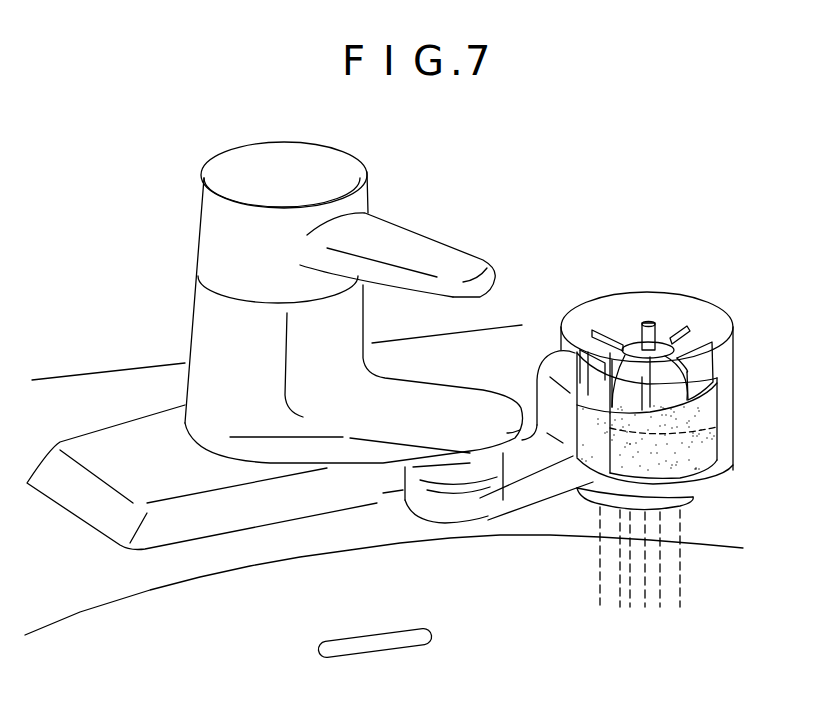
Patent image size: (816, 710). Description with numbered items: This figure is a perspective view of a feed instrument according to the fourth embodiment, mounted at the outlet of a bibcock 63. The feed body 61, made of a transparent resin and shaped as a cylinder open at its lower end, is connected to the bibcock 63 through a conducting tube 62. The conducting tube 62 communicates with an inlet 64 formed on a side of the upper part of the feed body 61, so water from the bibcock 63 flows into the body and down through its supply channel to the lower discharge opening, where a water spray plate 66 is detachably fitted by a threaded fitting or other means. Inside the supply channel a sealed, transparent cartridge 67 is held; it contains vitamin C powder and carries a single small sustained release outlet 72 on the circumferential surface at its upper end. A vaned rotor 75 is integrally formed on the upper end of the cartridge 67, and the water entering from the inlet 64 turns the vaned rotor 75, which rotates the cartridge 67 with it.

The feed body 61 is at (733, 418).
The conducting tube 62 is at (530, 497).
The bibcock 63 is at (390, 453).
The inlet 64 is at (553, 363).
The water spray plate 66 is at (683, 507).
The cartridge 67 is at (707, 450).
The sustained release outlet 72 is at (717, 403).
The vaned rotor 75 is at (703, 367).